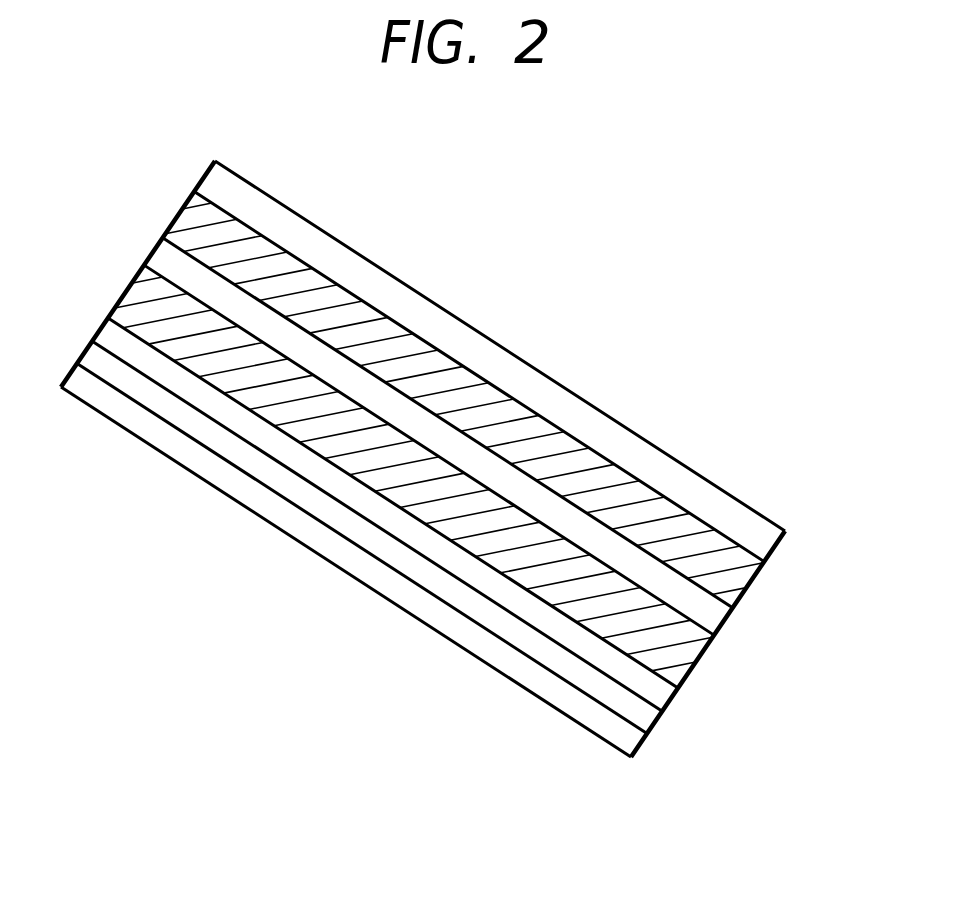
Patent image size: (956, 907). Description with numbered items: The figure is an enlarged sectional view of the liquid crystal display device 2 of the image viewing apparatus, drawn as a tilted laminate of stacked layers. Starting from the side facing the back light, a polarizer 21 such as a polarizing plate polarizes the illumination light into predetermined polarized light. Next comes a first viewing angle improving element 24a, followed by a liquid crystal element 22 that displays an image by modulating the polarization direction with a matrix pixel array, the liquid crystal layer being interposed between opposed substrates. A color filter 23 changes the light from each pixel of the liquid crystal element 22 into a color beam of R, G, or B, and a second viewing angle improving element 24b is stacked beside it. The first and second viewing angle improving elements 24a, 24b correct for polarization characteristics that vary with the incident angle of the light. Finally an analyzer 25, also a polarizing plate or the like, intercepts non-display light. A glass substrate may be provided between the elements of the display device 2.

The liquid crystal display device 2 is at (205, 151).
The polarizer 21 is at (766, 534).
The liquid crystal element 22 is at (758, 577).
The color filter 23 is at (657, 695).
The first viewing angle improving element 24a is at (746, 562).
The second viewing angle improving element 24b is at (645, 718).
The analyzer 25 is at (629, 737).